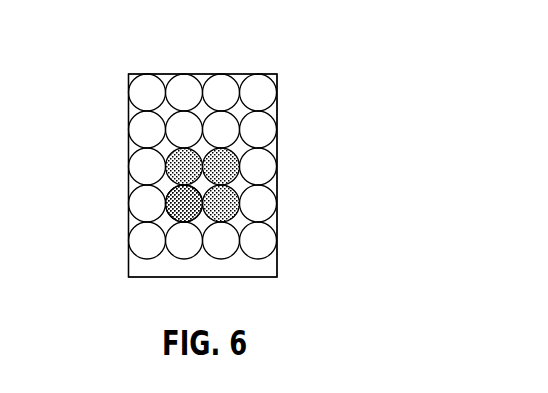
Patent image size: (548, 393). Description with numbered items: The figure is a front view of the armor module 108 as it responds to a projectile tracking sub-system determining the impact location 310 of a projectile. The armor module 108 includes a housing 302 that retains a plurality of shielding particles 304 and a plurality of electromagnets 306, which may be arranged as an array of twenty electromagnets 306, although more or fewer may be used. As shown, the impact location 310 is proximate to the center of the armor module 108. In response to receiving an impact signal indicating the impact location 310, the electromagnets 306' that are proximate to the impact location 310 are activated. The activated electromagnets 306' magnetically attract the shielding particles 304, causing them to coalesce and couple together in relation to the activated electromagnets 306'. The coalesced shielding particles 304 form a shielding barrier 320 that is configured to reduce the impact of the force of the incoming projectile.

The armor module 108 is at (116, 36).
The housing 302 is at (182, 75).
The shielding particles 304 is at (183, 207).
The electromagnets 306 is at (236, 160).
The activated electromagnets 306' is at (201, 210).
The impact location 310 is at (236, 154).
The shielding barrier 320 is at (202, 152).